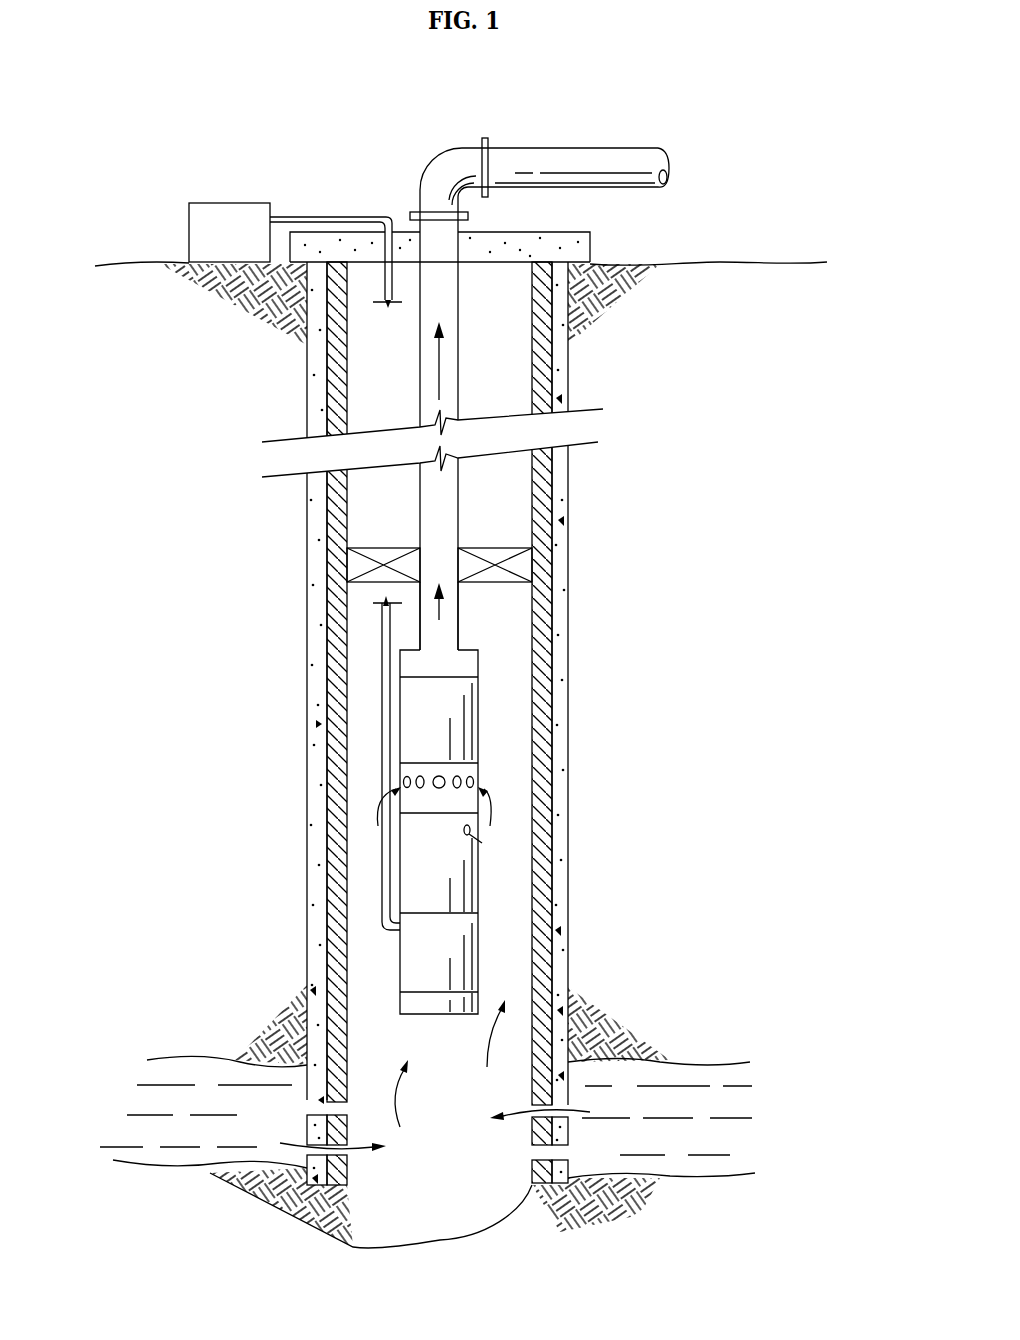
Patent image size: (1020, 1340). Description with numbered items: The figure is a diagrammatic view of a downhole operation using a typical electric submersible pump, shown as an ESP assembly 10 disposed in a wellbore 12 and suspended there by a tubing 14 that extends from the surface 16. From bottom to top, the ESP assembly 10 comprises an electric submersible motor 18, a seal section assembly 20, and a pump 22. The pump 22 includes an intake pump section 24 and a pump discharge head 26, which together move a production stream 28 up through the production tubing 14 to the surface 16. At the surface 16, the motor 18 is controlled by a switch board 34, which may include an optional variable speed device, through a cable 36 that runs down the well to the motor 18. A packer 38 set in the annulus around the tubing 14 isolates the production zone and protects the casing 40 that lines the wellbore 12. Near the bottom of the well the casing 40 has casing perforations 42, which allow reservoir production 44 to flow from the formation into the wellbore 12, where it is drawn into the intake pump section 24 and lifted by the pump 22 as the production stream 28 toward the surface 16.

The ESP assembly 10 is at (345, 703).
The wellbore 12 is at (310, 195).
The tubing 14 is at (458, 487).
The surface 16 is at (700, 263).
The electric submersible motor 18 is at (478, 952).
The seal section assembly 20 is at (407, 878).
The pump 22 is at (480, 723).
The intake pump section 24 is at (453, 782).
The pump discharge head 26 is at (470, 663).
The production stream 28 is at (450, 617).
The switch board 34 is at (217, 203).
The cable 36 is at (372, 605).
The packer 38 is at (345, 560).
The casing 40 is at (540, 380).
The casing perforations 42 is at (558, 1152).
The reservoir production 44 is at (347, 1150).